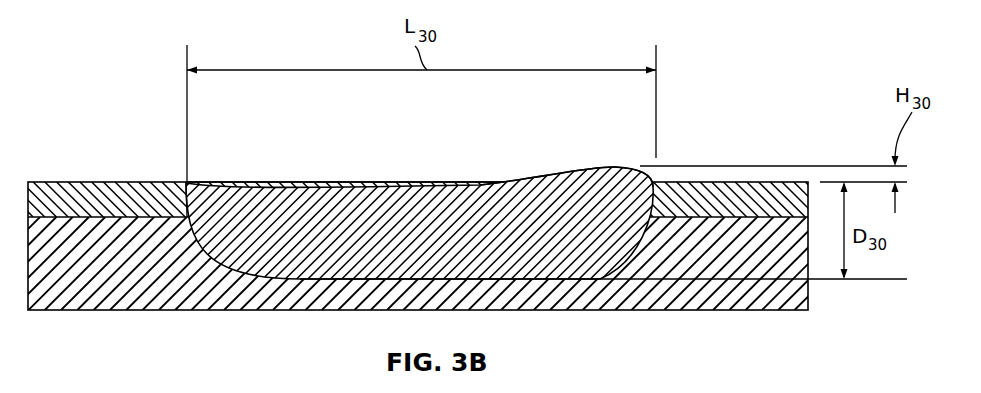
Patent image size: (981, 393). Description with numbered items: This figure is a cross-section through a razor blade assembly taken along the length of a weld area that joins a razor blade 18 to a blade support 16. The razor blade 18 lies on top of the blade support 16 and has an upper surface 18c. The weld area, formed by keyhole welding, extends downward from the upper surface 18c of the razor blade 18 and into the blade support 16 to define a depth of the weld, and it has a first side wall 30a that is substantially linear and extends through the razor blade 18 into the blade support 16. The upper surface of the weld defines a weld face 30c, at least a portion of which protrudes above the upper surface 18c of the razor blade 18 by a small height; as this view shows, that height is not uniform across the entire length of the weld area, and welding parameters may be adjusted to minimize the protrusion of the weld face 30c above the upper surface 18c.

The blade support 16 is at (152, 322).
The razor blade 18 is at (71, 176).
The upper surface 18c is at (144, 181).
The first side wall 30a is at (404, 168).
The weld face 30c is at (565, 168).